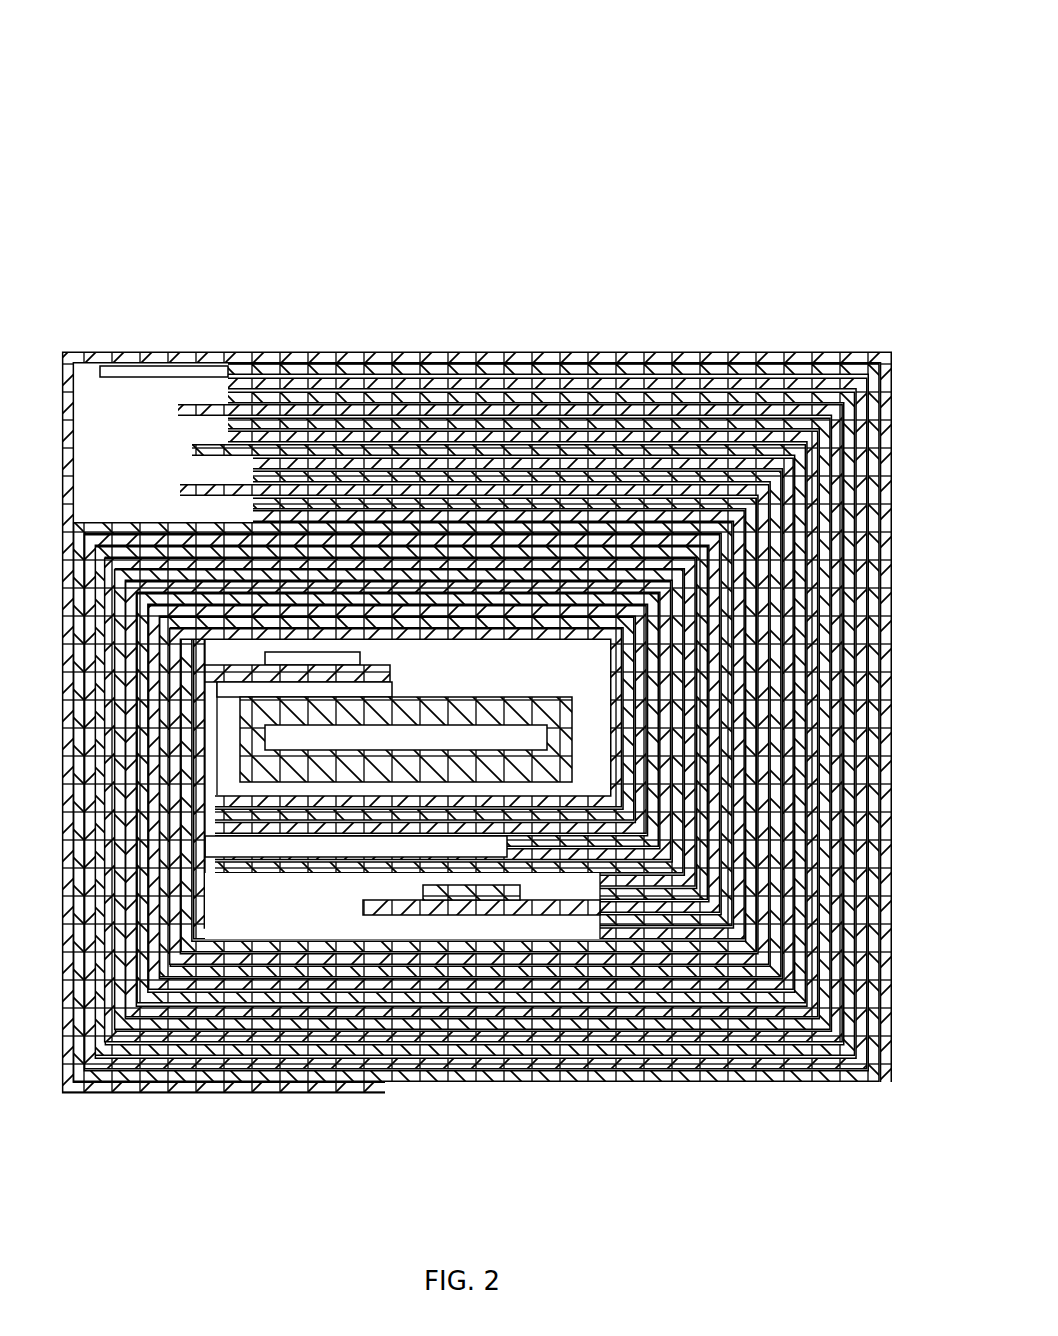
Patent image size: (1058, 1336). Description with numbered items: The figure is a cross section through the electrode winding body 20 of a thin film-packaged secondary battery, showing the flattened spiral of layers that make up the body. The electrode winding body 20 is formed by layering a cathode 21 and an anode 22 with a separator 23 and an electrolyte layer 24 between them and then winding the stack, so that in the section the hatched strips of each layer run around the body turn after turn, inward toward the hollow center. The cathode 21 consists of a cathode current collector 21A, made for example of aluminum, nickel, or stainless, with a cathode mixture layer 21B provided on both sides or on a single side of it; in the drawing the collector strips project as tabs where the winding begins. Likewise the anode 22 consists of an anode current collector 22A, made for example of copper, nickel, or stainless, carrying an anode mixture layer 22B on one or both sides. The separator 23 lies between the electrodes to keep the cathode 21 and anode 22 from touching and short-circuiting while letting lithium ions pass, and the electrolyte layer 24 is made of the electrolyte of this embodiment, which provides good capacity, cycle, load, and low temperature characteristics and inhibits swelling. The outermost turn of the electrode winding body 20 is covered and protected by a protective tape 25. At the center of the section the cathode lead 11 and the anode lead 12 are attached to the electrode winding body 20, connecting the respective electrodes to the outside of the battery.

The electrode winding body 20 is at (693, 119).
The cathode 21 is at (462, 591).
The cathode current collector 21A is at (215, 448).
The cathode mixture layer 21B is at (293, 458).
The anode 22 is at (476, 623).
The anode current collector 22A is at (577, 222).
The anode mixture layer 22B is at (603, 493).
The separator 23 is at (663, 400).
The electrolyte layer 24 is at (716, 500).
The protective tape 25 is at (835, 357).
The cathode lead 11 is at (288, 662).
The anode lead 12 is at (463, 890).